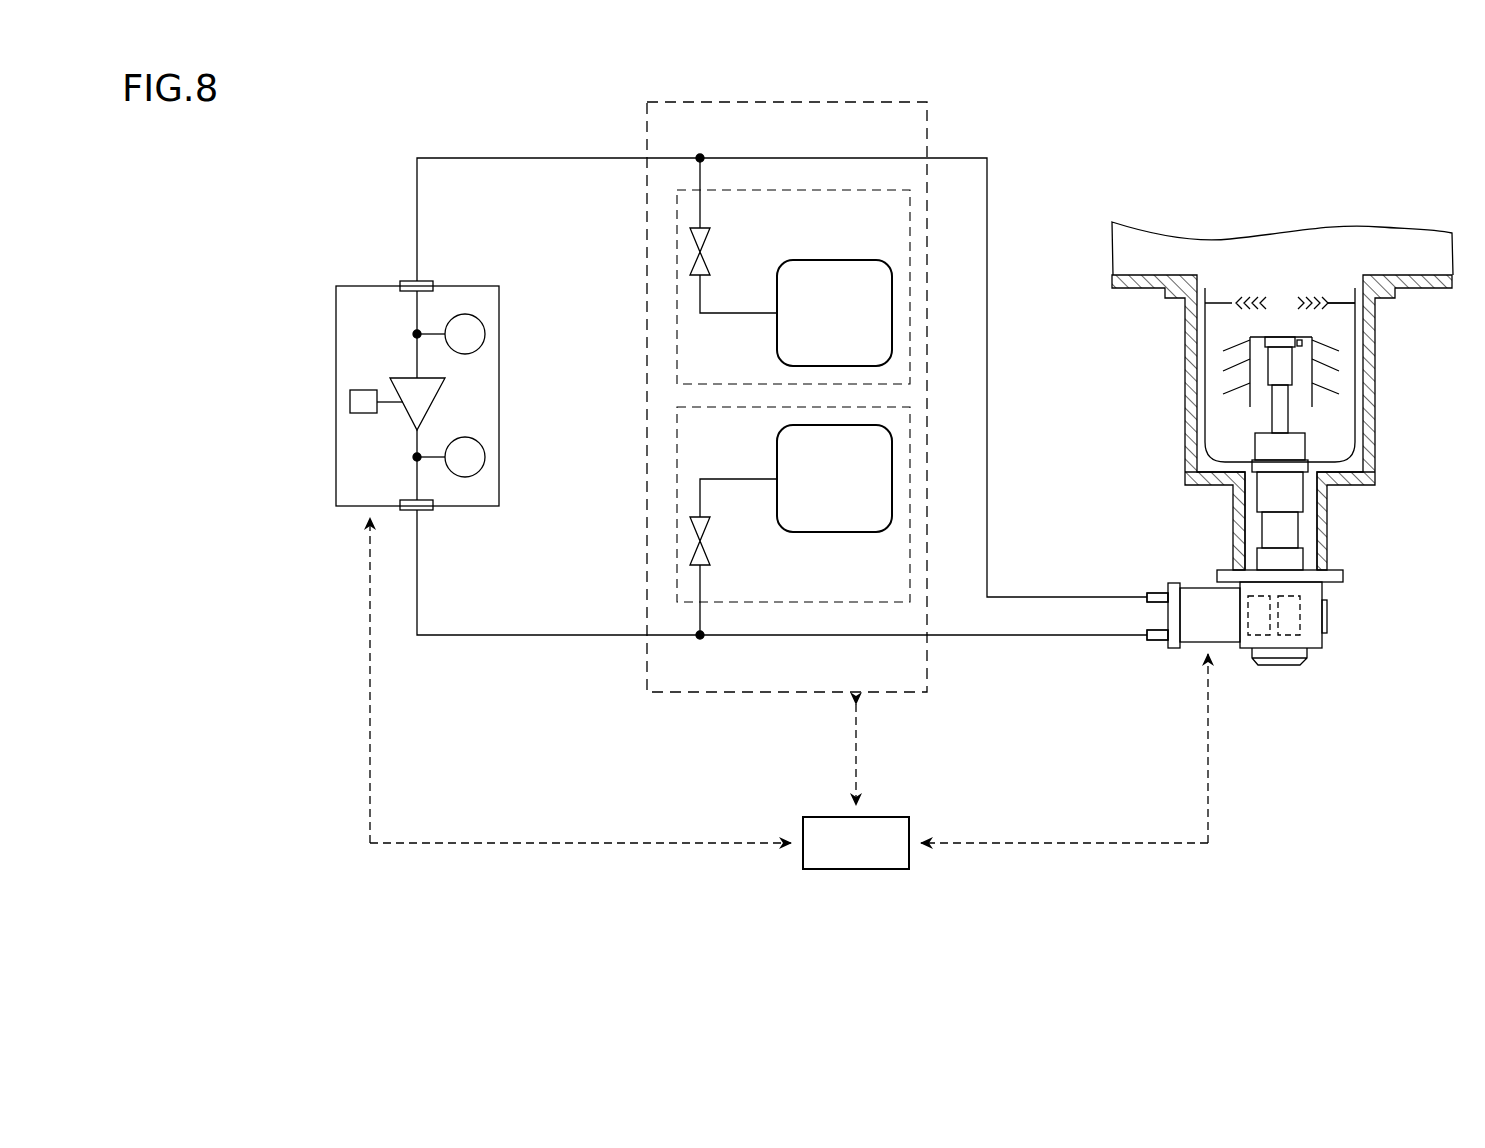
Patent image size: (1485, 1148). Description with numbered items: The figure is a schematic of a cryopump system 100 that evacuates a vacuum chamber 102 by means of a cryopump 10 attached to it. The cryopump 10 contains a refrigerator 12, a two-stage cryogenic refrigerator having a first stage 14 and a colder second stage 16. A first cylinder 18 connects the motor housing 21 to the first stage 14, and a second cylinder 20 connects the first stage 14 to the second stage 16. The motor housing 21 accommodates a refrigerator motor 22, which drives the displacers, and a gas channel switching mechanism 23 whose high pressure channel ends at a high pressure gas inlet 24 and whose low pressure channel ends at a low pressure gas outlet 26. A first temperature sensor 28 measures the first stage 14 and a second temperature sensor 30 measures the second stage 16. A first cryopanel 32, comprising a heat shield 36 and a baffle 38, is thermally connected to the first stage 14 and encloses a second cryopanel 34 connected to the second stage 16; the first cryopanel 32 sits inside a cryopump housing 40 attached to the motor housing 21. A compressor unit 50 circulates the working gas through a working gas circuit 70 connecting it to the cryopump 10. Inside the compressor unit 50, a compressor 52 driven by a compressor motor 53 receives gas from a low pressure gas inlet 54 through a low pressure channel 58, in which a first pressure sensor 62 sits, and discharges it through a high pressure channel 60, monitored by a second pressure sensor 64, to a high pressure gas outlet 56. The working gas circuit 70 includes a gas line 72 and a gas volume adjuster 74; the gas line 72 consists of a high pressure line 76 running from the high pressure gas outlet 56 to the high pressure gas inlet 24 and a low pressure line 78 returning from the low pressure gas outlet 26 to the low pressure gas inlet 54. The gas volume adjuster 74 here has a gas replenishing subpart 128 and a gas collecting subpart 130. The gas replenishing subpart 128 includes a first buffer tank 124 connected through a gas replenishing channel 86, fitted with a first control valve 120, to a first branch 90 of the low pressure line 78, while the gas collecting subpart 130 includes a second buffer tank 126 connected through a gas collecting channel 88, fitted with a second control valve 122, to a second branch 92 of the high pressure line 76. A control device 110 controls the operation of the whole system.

The cryopump system 100 is at (368, 166).
The compressor unit 50 is at (334, 311).
The low pressure gas inlet 54 is at (427, 282).
The high pressure gas outlet 56 is at (427, 511).
The low pressure channel 58 is at (415, 320).
The high pressure channel 60 is at (415, 485).
The first pressure sensor 62 is at (485, 323).
The second pressure sensor 64 is at (486, 446).
The compressor 52 is at (432, 406).
The compressor motor 53 is at (364, 413).
The first branch 90 is at (701, 157).
The second branch 92 is at (701, 637).
The gas replenishing channel 86 is at (729, 314).
The gas collecting channel 88 is at (729, 478).
The first control valve 120 is at (707, 256).
The second control valve 122 is at (707, 546).
The first buffer tank 124 is at (838, 259).
The second buffer tank 126 is at (838, 533).
The gas replenishing subpart 128 is at (676, 228).
The gas collecting subpart 130 is at (676, 461).
The gas volume adjuster 74 is at (907, 691).
The gas line 72 is at (1101, 722).
The working gas circuit 70 is at (1073, 760).
The high pressure line 76 is at (1023, 637).
The low pressure line 78 is at (1072, 599).
The control device 110 is at (866, 870).
The cryopump 10 is at (1108, 311).
The vacuum chamber 102 is at (1398, 240).
The first cryopanel 32 is at (1282, 181).
The baffle 38 is at (1308, 292).
The heat shield 36 is at (1349, 292).
The second stage 16 is at (1240, 352).
The cryopump housing 40 is at (1185, 413).
The first temperature sensor 28 is at (1252, 478).
The low pressure gas outlet 26 is at (1160, 588).
The high pressure gas inlet 24 is at (1160, 645).
The second temperature sensor 30 is at (1307, 345).
The second cryopanel 34 is at (1335, 385).
The second cryopanel 20 is at (1280, 420).
The first stage 14 is at (1308, 466).
The first cylinder 18 is at (1285, 532).
The motor housing 21 is at (1312, 615).
The refrigerator 12 is at (1330, 642).
The refrigerator motor 22 is at (1262, 640).
The gas channel switching mechanism 23 is at (1290, 640).